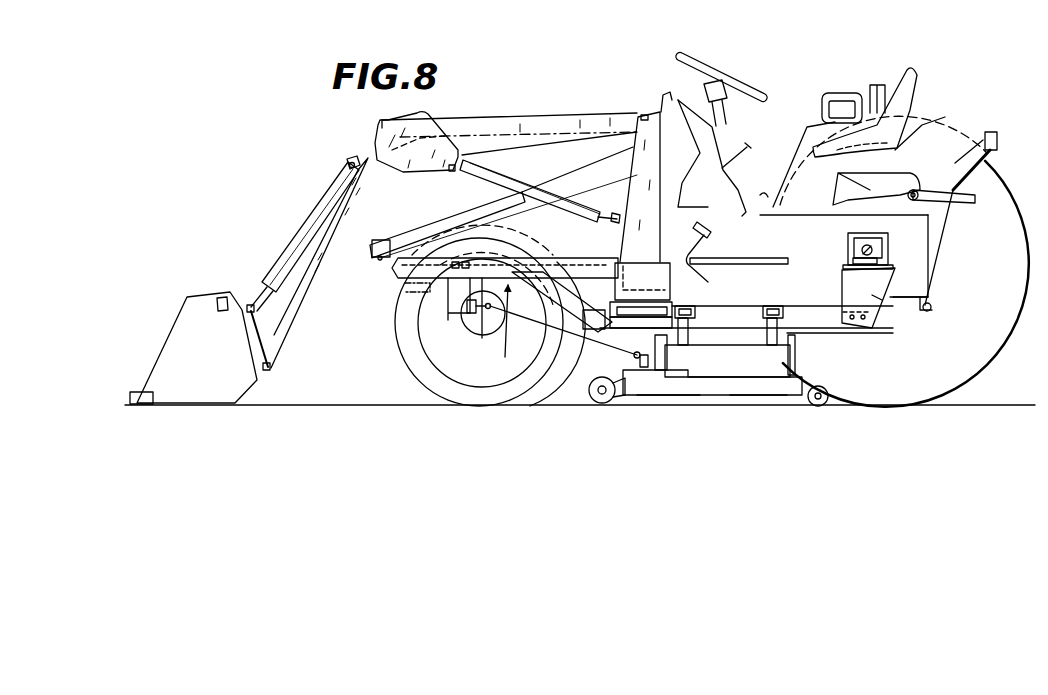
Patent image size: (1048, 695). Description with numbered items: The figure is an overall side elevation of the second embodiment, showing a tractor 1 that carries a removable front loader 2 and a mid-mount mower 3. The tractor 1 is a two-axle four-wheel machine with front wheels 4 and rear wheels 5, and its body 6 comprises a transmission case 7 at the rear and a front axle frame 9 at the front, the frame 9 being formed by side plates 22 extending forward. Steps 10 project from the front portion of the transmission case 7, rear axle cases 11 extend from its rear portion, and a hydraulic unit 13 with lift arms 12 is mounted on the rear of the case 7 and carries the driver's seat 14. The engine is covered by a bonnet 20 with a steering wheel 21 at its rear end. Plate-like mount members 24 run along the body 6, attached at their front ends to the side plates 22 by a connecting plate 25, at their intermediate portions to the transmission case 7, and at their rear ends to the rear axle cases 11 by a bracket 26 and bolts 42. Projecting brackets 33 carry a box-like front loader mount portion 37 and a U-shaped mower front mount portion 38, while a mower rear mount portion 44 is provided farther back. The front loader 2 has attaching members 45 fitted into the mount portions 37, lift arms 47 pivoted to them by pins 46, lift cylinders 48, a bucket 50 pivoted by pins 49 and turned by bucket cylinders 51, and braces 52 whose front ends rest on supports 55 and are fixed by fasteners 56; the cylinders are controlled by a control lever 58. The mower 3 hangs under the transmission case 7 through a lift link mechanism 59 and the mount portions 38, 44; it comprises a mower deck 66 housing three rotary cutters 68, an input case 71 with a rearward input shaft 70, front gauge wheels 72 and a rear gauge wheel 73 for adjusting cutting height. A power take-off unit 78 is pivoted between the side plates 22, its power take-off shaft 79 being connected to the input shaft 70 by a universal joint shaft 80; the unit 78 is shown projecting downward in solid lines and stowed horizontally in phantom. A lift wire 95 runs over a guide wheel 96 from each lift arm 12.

The tractor 1 is at (743, 72).
The front loader 2 is at (321, 192).
The mower 3 is at (723, 400).
The front wheels 4 is at (415, 376).
The rear wheels 5 is at (960, 380).
The body 6 is at (935, 244).
The transmission case 7 is at (870, 190).
The front axle frame 9 is at (504, 331).
The steps 10 is at (717, 253).
The rear axle cases 11 is at (870, 233).
The lift arms 12 is at (953, 170).
The hydraulic unit 13 is at (937, 192).
The driver's seat 14 is at (910, 95).
The bonnet 20 is at (352, 160).
The steering wheel 21 is at (697, 60).
The side plates 22 is at (497, 263).
The mount members 24 is at (833, 330).
The connecting plate 25 is at (537, 282).
The bracket 26 is at (875, 298).
The projecting brackets 33 is at (596, 330).
The front loader mount portion 37 is at (650, 270).
The mower front mount portion 38 is at (697, 310).
The bolts 42 is at (865, 325).
The mower rear mount portion 44 is at (787, 300).
The attaching members 45 is at (710, 127).
The pins 46 is at (640, 117).
The lift arms 47 is at (533, 123).
The lift cylinders 48 is at (480, 157).
The pins 49 is at (275, 370).
The bucket 50 is at (210, 395).
The bucket cylinders 51 is at (278, 262).
The braces 52 is at (567, 180).
The supports 55 is at (387, 267).
The fasteners 56 is at (407, 217).
The control lever 58 is at (717, 67).
The lift link mechanism 59 is at (783, 317).
The mower deck 66 is at (747, 392).
The rotary cutters 68 is at (647, 398).
The input shaft 70 is at (642, 364).
The input case 71 is at (678, 360).
The front cutting height adjusting gauge wheels 72 is at (600, 395).
The rear cutting height adjusting gauge wheel 73 is at (818, 405).
The power take-off unit 78 is at (428, 292).
The power take-off shaft 79 is at (481, 313).
The universal joint shaft 80 is at (557, 337).
The lift wire 95 is at (903, 310).
The guide wheel 96 is at (932, 309).